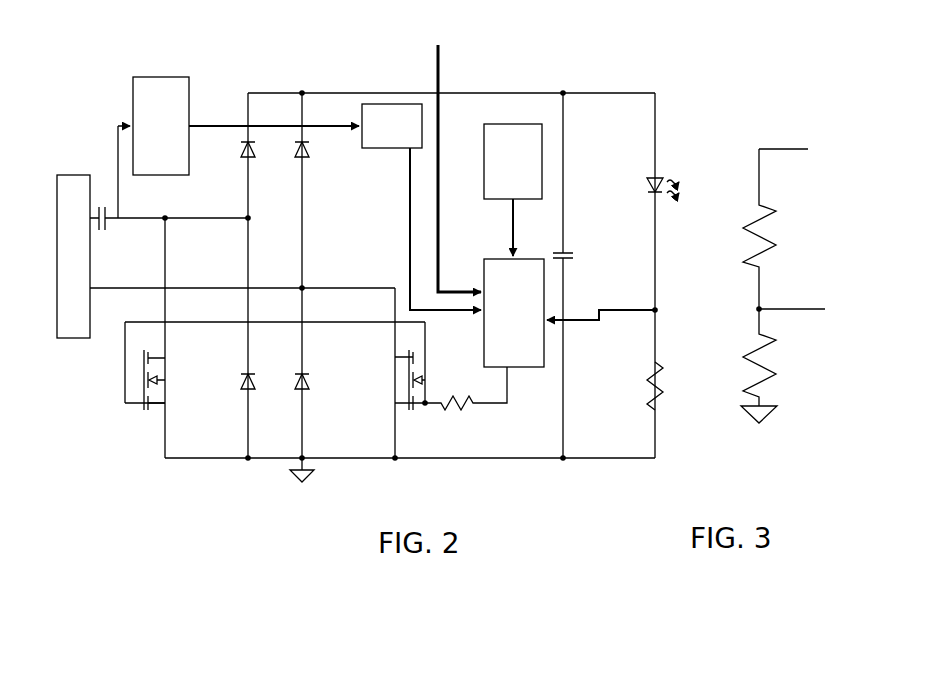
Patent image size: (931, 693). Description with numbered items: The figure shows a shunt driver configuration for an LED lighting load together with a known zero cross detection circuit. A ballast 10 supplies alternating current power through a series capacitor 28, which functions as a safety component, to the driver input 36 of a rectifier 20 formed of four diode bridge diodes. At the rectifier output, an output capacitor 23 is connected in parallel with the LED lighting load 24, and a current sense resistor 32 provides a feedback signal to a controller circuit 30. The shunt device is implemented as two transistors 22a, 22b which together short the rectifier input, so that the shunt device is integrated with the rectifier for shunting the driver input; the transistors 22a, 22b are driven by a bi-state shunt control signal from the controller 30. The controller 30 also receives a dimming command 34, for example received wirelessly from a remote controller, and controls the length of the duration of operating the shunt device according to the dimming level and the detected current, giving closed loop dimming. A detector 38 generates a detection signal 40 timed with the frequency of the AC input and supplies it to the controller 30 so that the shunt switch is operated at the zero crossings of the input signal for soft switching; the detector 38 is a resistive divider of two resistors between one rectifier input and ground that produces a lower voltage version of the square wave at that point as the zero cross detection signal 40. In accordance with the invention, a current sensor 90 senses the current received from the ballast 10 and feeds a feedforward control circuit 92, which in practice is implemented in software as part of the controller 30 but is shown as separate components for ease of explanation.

In FIG. 2, the ballast 10 is at (72, 175).
In FIG. 2, the rectifier 20 is at (268, 80).
In FIG. 2, the shunt device transistor 22a is at (193, 352).
In FIG. 2, the shunt device transistor 22b is at (395, 397).
In FIG. 2, the output capacitor 23 is at (569, 246).
In FIG. 2, the LED lighting load 24 is at (652, 180).
In FIG. 2, the series capacitor 28 is at (105, 228).
In FIG. 2, the controller circuit 30 is at (484, 272).
In FIG. 2, the current sense resistor 32 is at (652, 396).
In FIG. 2, the dimming command 34 is at (438, 78).
In FIG. 2, the driver input 36 is at (248, 218).
In FIG. 2, the detector 38 is at (484, 167).
In FIG. 3, the detector 38 is at (819, 211).
In FIG. 2, the detection signal 40 is at (513, 232).
In FIG. 3, the detection signal 40 is at (803, 310).
In FIG. 2, the current sensor 90 is at (133, 110).
In FIG. 2, the feedforward control circuit 92 is at (380, 104).